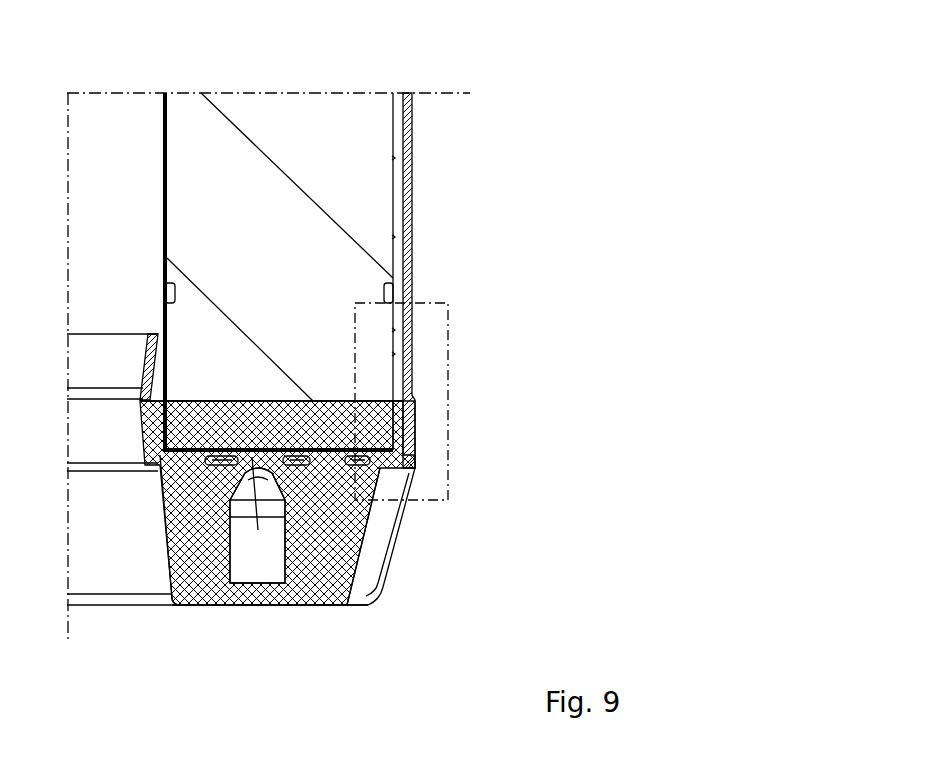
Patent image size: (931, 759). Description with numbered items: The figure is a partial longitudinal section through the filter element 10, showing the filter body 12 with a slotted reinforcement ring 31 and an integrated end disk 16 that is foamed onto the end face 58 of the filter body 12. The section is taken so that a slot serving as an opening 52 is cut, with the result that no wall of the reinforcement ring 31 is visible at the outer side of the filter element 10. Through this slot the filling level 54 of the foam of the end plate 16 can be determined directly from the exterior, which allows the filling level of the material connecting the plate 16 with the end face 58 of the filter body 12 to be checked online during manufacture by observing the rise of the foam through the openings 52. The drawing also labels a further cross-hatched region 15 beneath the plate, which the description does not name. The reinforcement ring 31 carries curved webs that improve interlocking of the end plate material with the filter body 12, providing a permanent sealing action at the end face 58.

The filter element 10 is at (532, 148).
The filter body 12 is at (380, 196).
The cone-shaped base element 15 is at (310, 607).
The end disk 16 is at (185, 612).
The reinforcement ring 31 is at (415, 408).
The opening 52 is at (430, 436).
The filling level 54 is at (280, 401).
The end face 58 is at (266, 605).